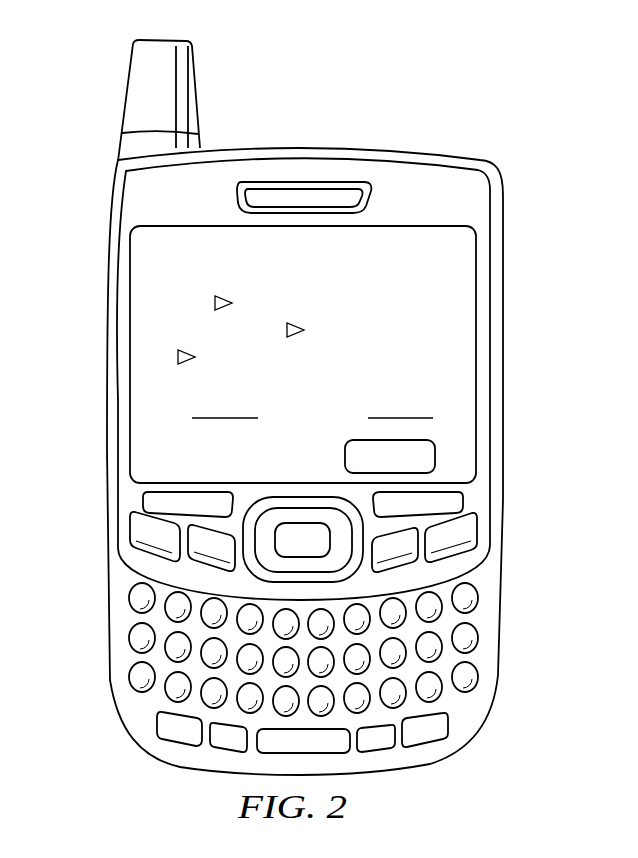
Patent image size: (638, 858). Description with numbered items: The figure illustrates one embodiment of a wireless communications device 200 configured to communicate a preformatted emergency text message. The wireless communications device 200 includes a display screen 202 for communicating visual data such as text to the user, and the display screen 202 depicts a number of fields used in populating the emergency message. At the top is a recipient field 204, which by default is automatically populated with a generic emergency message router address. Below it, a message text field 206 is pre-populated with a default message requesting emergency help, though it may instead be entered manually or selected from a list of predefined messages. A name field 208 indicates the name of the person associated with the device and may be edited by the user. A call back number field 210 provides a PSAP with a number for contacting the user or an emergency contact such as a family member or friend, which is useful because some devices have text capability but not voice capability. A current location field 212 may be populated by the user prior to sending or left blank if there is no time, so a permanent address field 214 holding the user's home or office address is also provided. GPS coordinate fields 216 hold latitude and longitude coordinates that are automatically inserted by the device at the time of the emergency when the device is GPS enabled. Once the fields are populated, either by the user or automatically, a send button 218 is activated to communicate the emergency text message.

The wireless communications device 200 is at (367, 148).
The display screen 202 is at (220, 466).
The recipient field 204 is at (140, 242).
The message text field 206 is at (140, 272).
The name field 208 is at (140, 300).
The call back number field 210 is at (140, 324).
The current location field 212 is at (140, 352).
The permanent address field 214 is at (140, 377).
The GPS coordinate fields 216 is at (140, 407).
The send button 218 is at (345, 452).